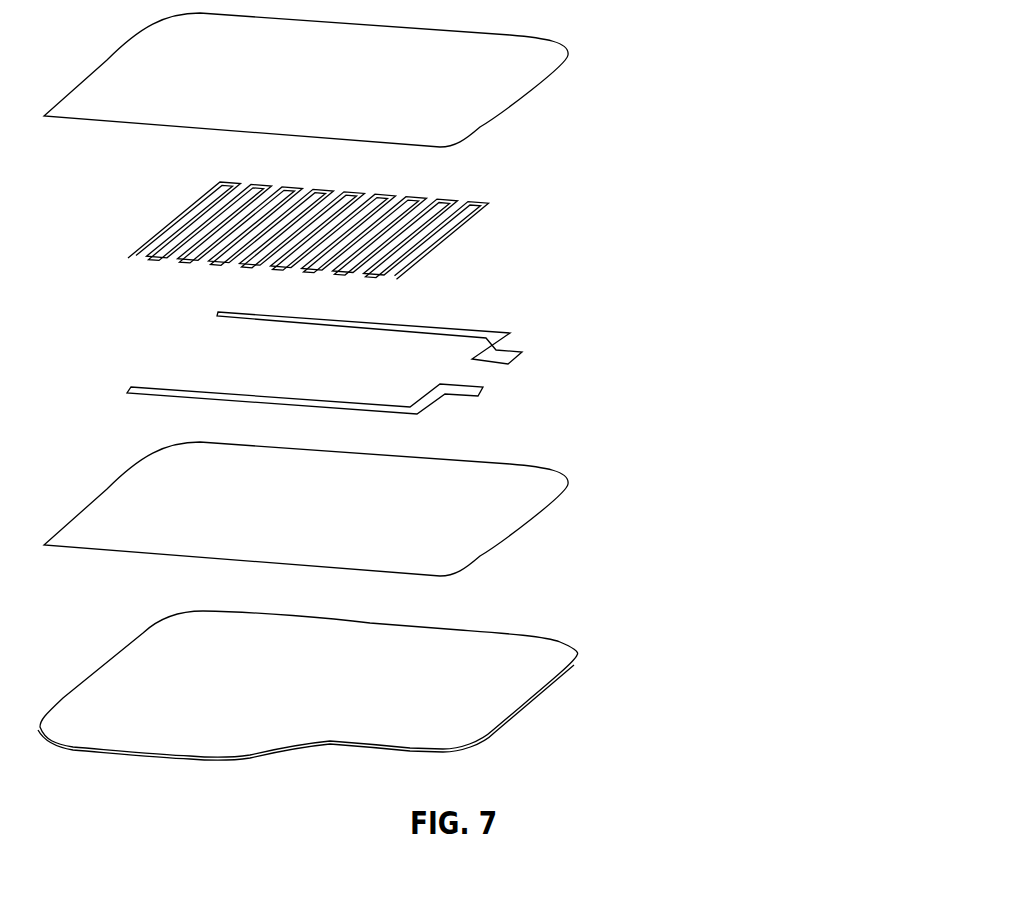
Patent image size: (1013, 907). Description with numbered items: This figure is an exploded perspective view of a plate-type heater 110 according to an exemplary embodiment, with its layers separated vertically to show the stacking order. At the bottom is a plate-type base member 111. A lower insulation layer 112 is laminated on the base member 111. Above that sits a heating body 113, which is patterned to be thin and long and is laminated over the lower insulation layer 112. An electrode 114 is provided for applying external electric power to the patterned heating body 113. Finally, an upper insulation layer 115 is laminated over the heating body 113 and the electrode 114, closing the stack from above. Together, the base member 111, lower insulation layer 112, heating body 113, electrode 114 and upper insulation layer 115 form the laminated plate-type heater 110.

The plate-type heater 110 is at (686, 389).
The plate-type base member 111 is at (577, 662).
The lower insulation layer 112 is at (568, 490).
The heating body 113 is at (473, 215).
The electrode 114 is at (512, 353).
The upper insulation layer 115 is at (533, 87).